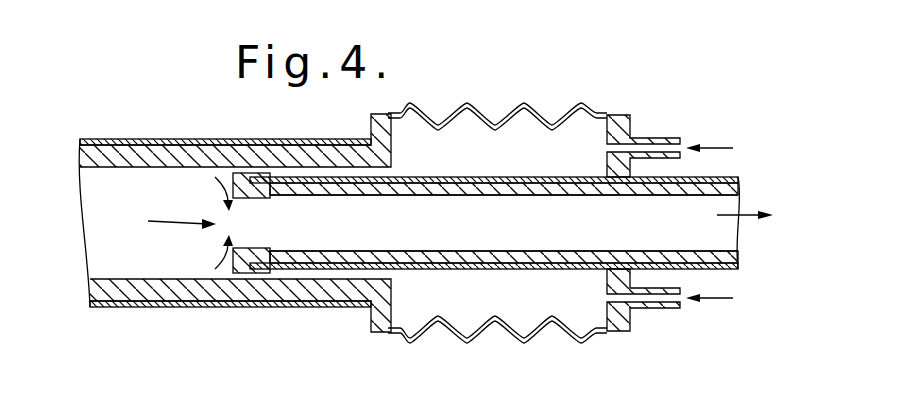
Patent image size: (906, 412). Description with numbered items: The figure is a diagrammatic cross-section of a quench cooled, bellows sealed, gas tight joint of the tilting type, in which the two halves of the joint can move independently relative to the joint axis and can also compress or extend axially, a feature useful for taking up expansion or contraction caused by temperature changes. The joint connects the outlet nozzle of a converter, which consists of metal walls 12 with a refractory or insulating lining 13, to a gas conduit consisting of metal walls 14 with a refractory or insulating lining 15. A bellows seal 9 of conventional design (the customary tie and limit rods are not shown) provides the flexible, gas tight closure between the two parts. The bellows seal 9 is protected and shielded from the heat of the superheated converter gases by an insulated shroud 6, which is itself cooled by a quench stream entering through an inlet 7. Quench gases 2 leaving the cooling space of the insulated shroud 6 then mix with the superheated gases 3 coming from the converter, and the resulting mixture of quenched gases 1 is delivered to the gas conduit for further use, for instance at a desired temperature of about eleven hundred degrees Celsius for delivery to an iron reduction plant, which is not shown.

The mixture of quenched gases 1 is at (745, 215).
The quench gases 2 is at (213, 185).
The superheated gases 3 is at (173, 223).
The insulated shroud 6 is at (445, 185).
The inlet 7 is at (710, 148).
The bellows seal 9 is at (538, 113).
The metal walls 12 is at (105, 139).
The refractory or insulating lining 13 is at (155, 160).
The metal walls 14 is at (720, 177).
The refractory or insulating lining 15 is at (738, 178).